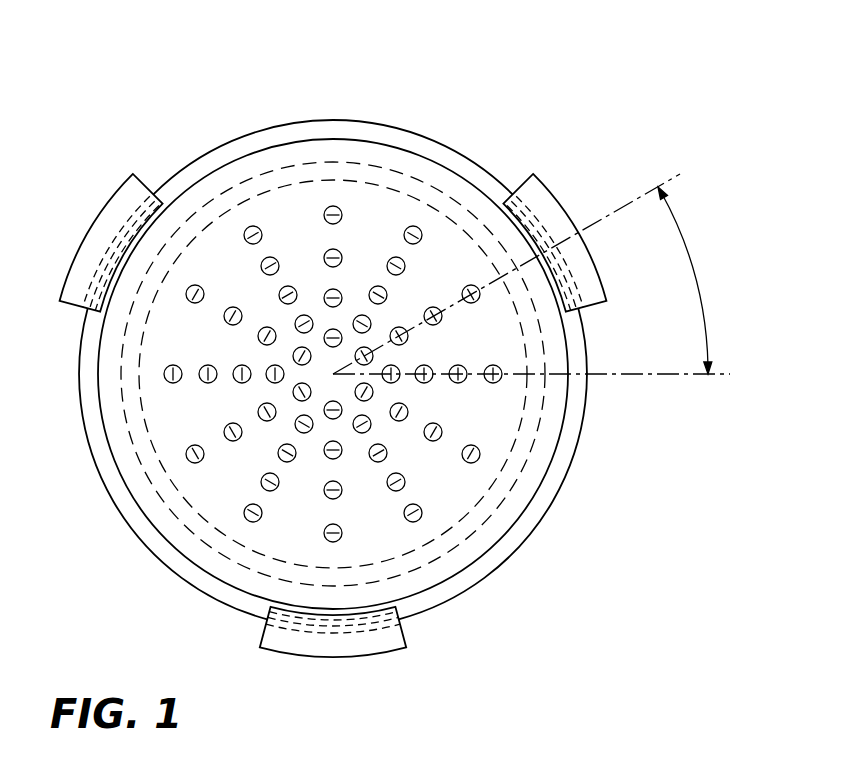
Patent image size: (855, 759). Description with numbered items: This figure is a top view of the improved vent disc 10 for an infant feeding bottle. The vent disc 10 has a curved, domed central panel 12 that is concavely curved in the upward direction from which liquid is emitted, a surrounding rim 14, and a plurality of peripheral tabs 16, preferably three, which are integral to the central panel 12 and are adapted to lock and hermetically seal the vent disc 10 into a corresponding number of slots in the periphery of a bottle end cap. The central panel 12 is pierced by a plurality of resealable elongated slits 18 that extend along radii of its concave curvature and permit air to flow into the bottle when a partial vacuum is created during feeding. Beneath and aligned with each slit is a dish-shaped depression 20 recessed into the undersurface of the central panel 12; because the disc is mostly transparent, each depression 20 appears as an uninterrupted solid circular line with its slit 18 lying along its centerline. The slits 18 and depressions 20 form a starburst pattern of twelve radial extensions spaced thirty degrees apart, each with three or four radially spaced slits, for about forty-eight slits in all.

The vent disc 10 is at (210, 82).
The central panel 12 is at (372, 228).
The rim 14 is at (462, 167).
The peripheral tabs 16 is at (558, 200).
The slits 18 is at (252, 227).
The depression 20 is at (158, 202).